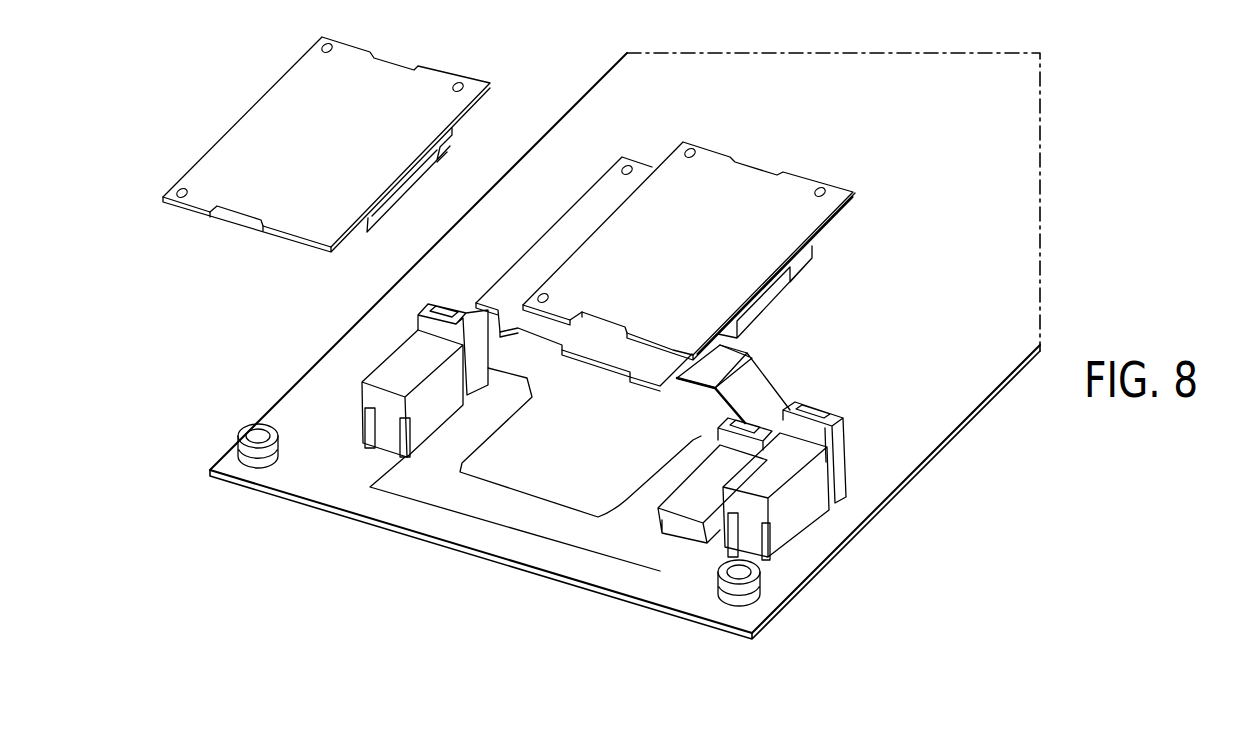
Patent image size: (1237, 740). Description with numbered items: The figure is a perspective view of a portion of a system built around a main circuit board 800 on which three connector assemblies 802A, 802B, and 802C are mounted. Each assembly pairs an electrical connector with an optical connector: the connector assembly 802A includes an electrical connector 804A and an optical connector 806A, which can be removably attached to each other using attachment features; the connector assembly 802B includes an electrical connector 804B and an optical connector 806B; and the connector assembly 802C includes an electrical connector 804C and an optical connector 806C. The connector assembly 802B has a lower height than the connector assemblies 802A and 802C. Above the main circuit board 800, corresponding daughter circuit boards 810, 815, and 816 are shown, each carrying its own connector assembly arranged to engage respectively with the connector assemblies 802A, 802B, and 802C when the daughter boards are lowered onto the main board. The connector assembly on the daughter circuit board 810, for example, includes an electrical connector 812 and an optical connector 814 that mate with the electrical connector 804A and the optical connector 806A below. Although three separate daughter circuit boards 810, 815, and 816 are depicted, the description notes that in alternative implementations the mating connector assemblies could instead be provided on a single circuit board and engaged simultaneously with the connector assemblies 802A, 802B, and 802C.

The main circuit board 800 is at (850, 517).
The connector assembly 802A is at (438, 485).
The connector assembly 802B is at (644, 558).
The connector assembly 802C is at (871, 511).
The electrical connector 804A is at (420, 440).
The electrical connector 804B is at (695, 505).
The electrical connector 804C is at (800, 528).
The optical connector 806A is at (480, 393).
The optical connector 806B is at (712, 436).
The optical connector 806C is at (831, 503).
The daughter circuit board 810 is at (245, 118).
The electrical connector 812 is at (363, 233).
The optical connector 814 is at (440, 163).
The daughter circuit board 815 is at (597, 193).
The daughter circuit board 816 is at (787, 187).